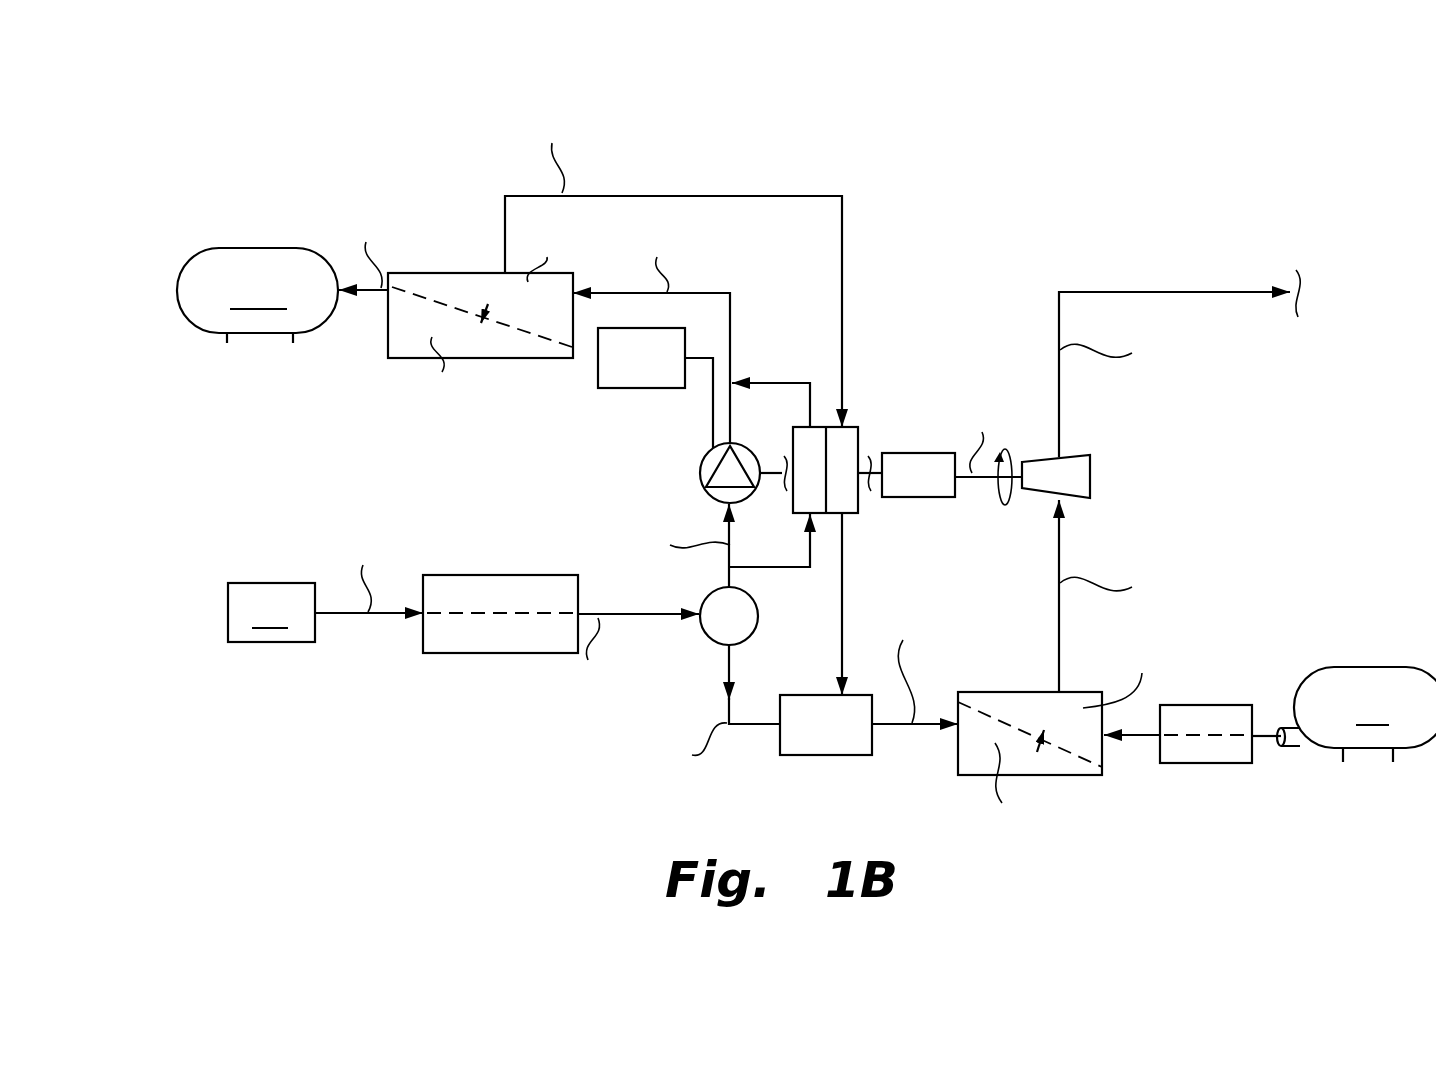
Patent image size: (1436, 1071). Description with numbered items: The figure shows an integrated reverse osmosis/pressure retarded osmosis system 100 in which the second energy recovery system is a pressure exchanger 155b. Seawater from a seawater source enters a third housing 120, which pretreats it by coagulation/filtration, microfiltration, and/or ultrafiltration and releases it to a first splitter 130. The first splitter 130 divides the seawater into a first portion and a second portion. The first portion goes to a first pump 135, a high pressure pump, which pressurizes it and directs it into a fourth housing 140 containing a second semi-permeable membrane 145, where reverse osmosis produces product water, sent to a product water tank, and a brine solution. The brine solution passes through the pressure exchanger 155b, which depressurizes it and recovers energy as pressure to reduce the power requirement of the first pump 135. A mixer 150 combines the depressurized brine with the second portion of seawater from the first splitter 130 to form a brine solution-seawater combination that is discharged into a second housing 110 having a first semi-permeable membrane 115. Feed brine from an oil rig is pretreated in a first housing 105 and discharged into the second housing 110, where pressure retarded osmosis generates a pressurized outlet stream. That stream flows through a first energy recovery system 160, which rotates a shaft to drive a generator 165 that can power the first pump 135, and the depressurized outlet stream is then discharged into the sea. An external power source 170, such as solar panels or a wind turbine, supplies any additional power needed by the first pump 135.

The integrated reverse osmosis/pressure retarded osmosis system 100 is at (334, 136).
The first housing 105 is at (1223, 705).
The second housing 110 is at (947, 770).
The first semi-permeable membrane 115 is at (1068, 748).
The third housing 120 is at (502, 655).
The first splitter 130 is at (710, 642).
The first pump 135 is at (700, 473).
The fourth housing 140 is at (380, 358).
The second semi-permeable membrane 145 is at (512, 327).
The mixer 150 is at (854, 742).
The pressure exchanger 155b is at (860, 507).
The first energy recovery system 160 is at (1092, 473).
The generator 165 is at (923, 453).
The external power source 170 is at (667, 373).